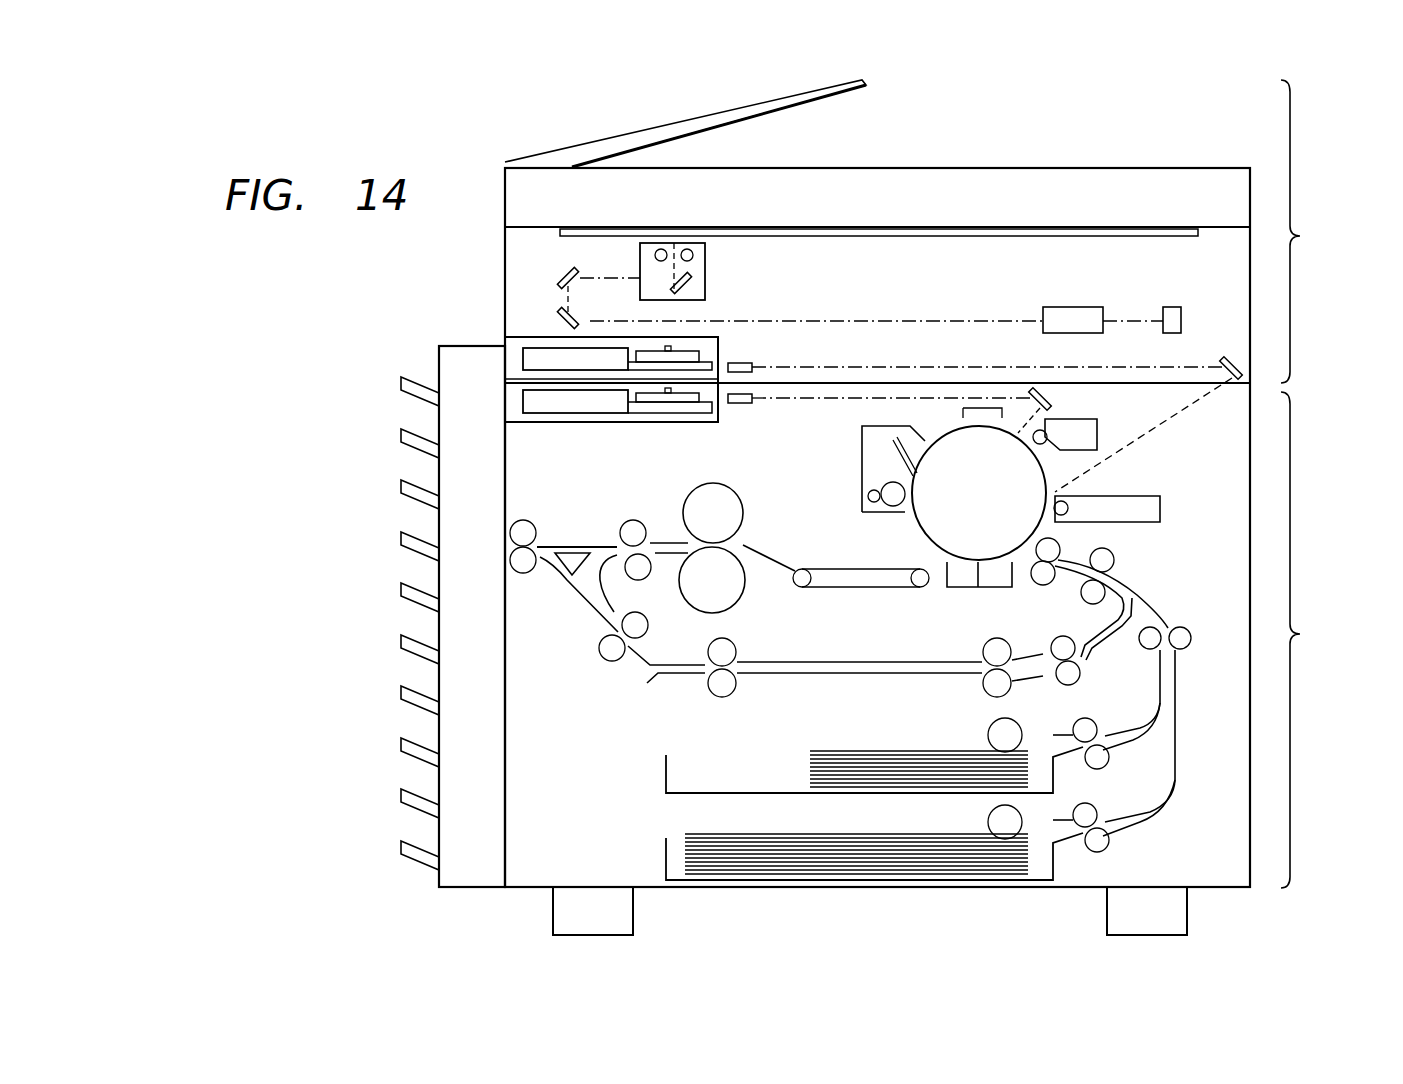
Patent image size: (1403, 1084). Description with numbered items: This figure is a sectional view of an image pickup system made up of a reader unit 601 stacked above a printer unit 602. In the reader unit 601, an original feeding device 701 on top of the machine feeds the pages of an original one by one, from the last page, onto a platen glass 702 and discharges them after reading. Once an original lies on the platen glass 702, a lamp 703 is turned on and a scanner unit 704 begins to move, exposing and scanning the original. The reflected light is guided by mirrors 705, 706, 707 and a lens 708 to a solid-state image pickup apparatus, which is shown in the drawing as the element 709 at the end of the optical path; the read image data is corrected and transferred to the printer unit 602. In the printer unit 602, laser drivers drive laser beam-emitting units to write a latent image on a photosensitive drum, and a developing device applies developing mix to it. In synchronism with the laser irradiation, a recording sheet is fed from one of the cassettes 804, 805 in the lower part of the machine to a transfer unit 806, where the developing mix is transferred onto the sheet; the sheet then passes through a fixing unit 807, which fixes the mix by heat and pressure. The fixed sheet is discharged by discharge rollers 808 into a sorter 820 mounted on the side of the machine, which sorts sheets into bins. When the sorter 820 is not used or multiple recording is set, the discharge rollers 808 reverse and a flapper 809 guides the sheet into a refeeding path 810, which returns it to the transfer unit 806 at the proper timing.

The reader unit 601 is at (1316, 231).
The printer unit 602 is at (1316, 640).
The original feeding device 701 is at (632, 127).
The platen glass 702 is at (1137, 235).
The lamp 703 is at (689, 245).
The scanner unit 704 is at (706, 262).
The mirror 705 is at (700, 292).
The mirror 706 is at (562, 274).
The mirror 707 is at (560, 315).
The lens 708 is at (1076, 308).
The image sensor 709 is at (1172, 308).
The cassette 804 is at (922, 753).
The cassette 805 is at (905, 840).
The transfer unit 806 is at (985, 580).
The fixing unit 807 is at (704, 574).
The discharge rollers 808 is at (512, 558).
The flapper 809 is at (566, 575).
The refeeding path 810 is at (826, 685).
The sorter 820 is at (468, 346).